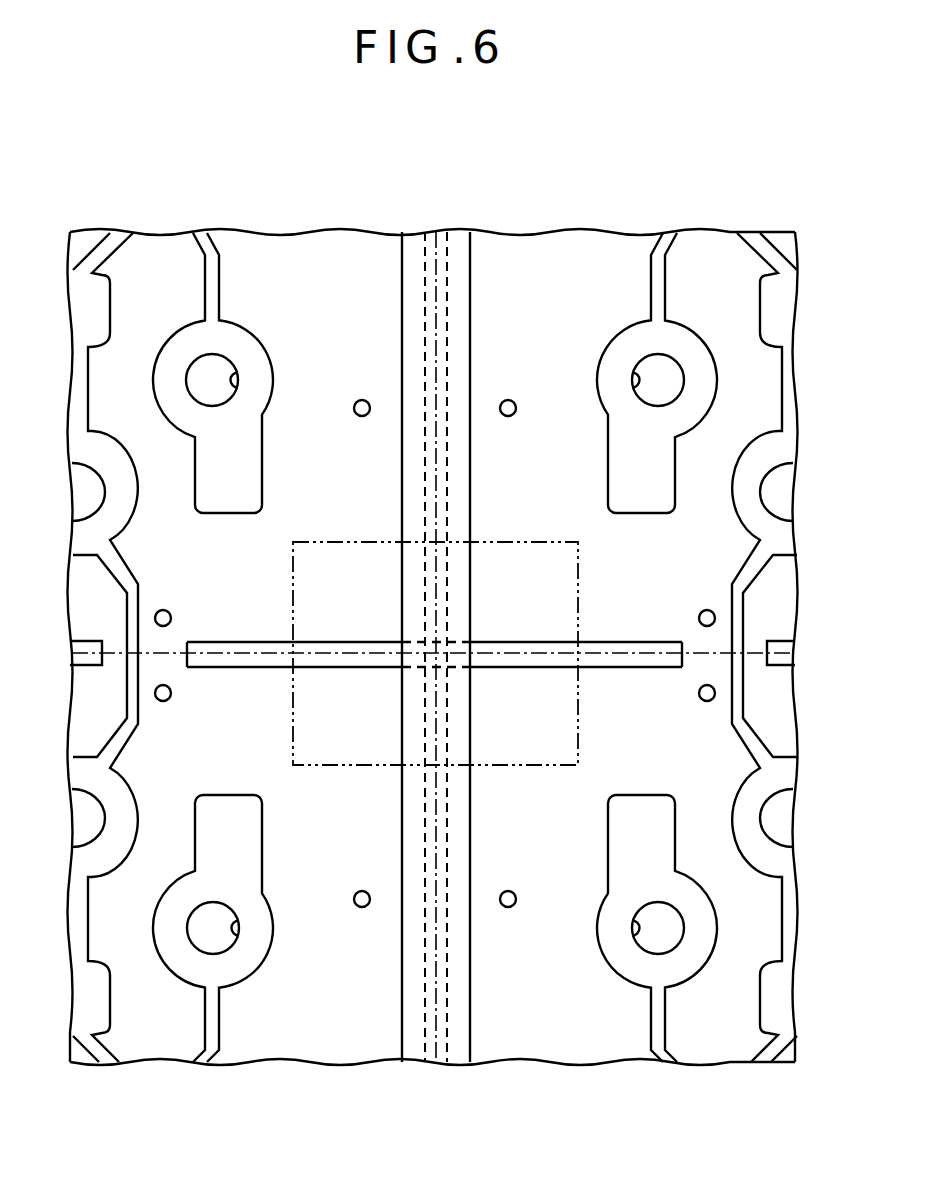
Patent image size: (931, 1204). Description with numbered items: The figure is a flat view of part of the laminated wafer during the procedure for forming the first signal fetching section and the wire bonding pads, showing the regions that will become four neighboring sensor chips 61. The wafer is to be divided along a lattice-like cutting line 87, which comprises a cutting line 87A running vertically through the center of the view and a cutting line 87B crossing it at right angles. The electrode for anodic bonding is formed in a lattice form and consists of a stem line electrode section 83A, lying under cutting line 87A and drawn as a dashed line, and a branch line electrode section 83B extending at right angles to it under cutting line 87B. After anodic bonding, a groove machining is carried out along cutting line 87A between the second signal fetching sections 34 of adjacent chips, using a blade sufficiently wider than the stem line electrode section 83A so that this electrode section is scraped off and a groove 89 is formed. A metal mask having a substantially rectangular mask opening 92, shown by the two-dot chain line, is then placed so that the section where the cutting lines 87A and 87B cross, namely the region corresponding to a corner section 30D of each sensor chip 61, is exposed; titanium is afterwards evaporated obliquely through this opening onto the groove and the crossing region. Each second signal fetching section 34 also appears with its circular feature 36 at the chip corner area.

The sensor chip 61 is at (162, 257).
The second signal fetching section 34 is at (247, 340).
The through hole 36 is at (237, 393).
The groove 89 is at (458, 250).
The stem line electrode section 83A is at (423, 260).
The cutting line 87 is at (438, 988).
The cutting line 87A is at (437, 1028).
The branch line electrode section 83B is at (227, 643).
The cutting line 87B is at (658, 640).
The mask opening 92 is at (580, 728).
The corner section 30D is at (369, 611).